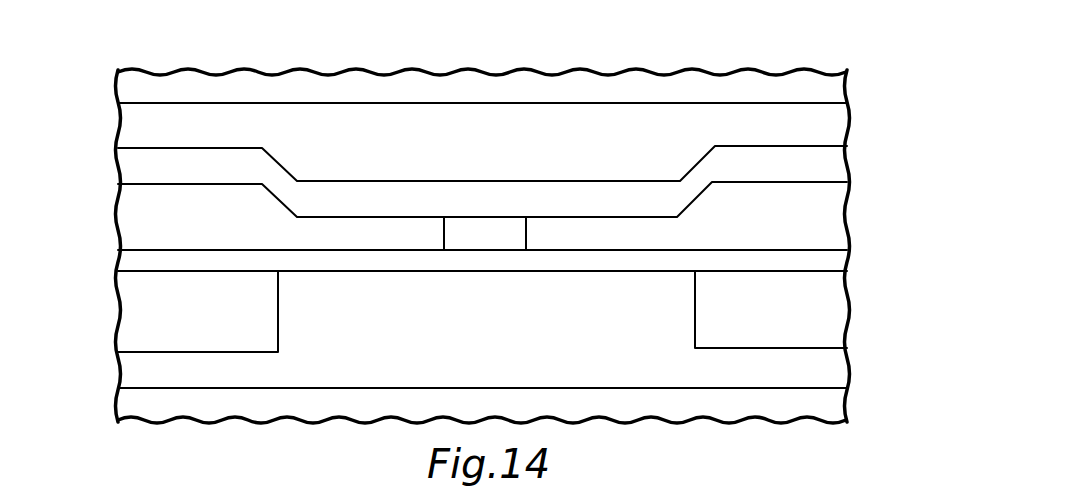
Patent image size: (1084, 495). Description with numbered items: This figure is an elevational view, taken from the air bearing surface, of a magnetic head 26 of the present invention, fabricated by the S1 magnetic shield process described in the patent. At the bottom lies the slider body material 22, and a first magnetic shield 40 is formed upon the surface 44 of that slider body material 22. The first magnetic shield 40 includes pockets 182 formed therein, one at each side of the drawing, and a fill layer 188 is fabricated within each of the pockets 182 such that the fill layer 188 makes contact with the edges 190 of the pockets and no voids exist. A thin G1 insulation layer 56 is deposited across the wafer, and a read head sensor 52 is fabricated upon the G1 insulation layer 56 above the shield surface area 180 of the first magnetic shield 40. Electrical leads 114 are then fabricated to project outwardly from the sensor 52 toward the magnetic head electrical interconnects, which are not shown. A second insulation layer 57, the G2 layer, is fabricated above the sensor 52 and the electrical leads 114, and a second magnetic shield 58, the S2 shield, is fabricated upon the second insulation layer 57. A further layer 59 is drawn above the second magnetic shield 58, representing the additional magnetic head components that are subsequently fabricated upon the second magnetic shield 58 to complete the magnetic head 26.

The magnetic head 26 is at (207, 60).
The upper layer 59 is at (833, 90).
The second magnetic shield 58 is at (830, 125).
The second insulation layer 57 is at (830, 160).
The electrical leads 114 is at (830, 208).
The G1 insulation layer 56 is at (830, 255).
The read head sensor 52 is at (482, 230).
The shield surface area 180 is at (505, 265).
The fill layer 188 is at (212, 324).
The edges of the pockets 190 is at (278, 262).
The pockets 182 is at (115, 296).
The first magnetic shield 40 is at (628, 343).
The surface of the slider body material 44 is at (506, 388).
The slider body material 22 is at (781, 405).